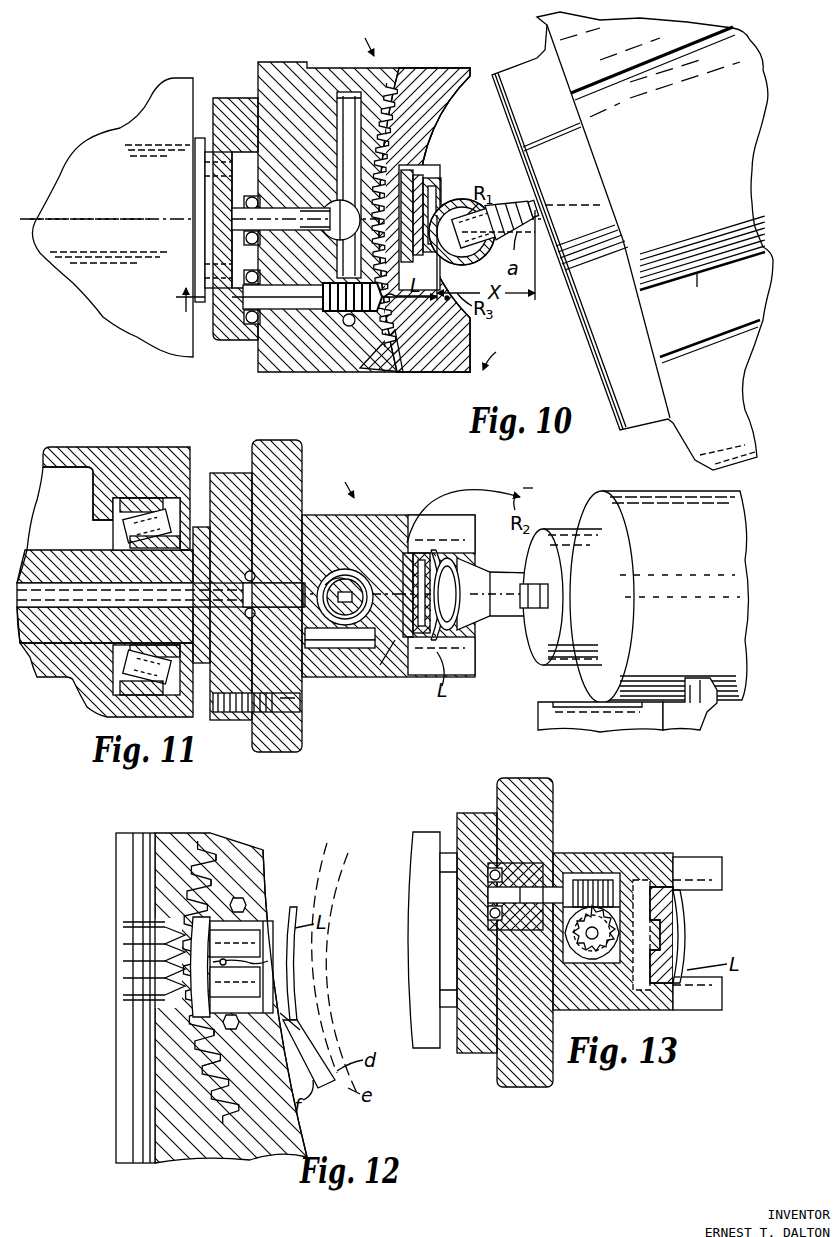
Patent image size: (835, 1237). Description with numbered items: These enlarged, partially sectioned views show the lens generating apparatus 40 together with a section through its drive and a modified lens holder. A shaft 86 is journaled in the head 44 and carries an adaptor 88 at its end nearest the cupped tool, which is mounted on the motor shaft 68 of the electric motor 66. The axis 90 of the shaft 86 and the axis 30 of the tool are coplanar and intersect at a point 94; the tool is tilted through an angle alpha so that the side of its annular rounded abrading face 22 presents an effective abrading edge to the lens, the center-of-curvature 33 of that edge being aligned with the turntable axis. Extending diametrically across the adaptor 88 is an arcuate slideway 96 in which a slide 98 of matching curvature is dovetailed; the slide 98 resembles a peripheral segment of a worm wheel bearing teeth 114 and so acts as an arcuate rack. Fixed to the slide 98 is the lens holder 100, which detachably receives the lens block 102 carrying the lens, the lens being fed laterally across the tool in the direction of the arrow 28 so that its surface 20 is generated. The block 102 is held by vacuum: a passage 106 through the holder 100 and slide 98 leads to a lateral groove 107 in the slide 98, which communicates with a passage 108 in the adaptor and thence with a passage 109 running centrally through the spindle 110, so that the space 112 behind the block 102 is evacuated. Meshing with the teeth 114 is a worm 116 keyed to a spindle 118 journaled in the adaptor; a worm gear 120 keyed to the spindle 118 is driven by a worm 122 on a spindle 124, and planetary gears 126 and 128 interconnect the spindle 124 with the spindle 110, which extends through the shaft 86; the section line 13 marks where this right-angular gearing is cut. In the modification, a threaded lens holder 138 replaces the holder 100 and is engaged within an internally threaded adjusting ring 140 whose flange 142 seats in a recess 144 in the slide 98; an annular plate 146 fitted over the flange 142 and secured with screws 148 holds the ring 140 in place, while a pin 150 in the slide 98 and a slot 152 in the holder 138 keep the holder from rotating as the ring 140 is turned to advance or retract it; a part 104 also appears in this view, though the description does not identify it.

In FIG. 10, the section line 13— 13 is at (308, 309).
In FIG. 11, the surface 20 is at (437, 650).
In FIG. 12, the surface 20 is at (299, 1000).
In FIG. 10, the annular rounded abrading face 22 is at (447, 300).
In FIG. 10, the arrow 28 is at (500, 356).
In FIG. 10, the axis 30 is at (573, 210).
In FIG. 10, the center-of-curvature 33 is at (434, 217).
In FIG. 10, the apparatus 40 is at (360, 35).
In FIG. 11, the apparatus 40 is at (388, 568).
In FIG. 10, the head 44 is at (107, 138).
In FIG. 11, the head 44 is at (103, 447).
In FIG. 13, the head 44 is at (425, 863).
In FIG. 10, the electric motor 66 is at (738, 46).
In FIG. 11, the electric motor 66 is at (727, 500).
In FIG. 11, the motor shaft 68 is at (550, 605).
In FIG. 11, the shaft 86 is at (57, 550).
In FIG. 10, the adaptor 88 is at (398, 66).
In FIG. 11, the adaptor 88 is at (303, 750).
In FIG. 12, the adaptor 88 is at (178, 828).
In FIG. 13, the adaptor 88 is at (527, 775).
In FIG. 10, the axis 90 is at (78, 218).
In FIG. 10, the point 94 is at (530, 203).
In FIG. 11, the point 94 is at (511, 618).
In FIG. 10, the arcuate slideway 96 is at (452, 372).
In FIG. 11, the arcuate slideway 96 is at (408, 548).
In FIG. 13, the arcuate slideway 96 is at (672, 878).
In FIG. 10, the slide 98 is at (425, 368).
In FIG. 11, the slide 98 is at (405, 650).
In FIG. 12, the slide 98 is at (240, 1120).
In FIG. 13, the slide 98 is at (662, 978).
In FIG. 10, the lens holder 100 is at (412, 172).
In FIG. 11, the lens holder 100 is at (410, 552).
In FIG. 10, the lens block 102 is at (420, 185).
In FIG. 11, the lens block 102 is at (422, 556).
In FIG. 12, the bolt 104 is at (282, 916).
In FIG. 11, the passage 106 is at (380, 636).
In FIG. 11, the lateral groove 107 is at (383, 648).
In FIG. 11, the passage 108 is at (312, 632).
In FIG. 11, the passage 109 is at (340, 572).
In FIG. 10, the spindle 110 is at (305, 197).
In FIG. 11, the spindle 110 is at (120, 582).
In FIG. 10, the space 112 is at (434, 200).
In FIG. 10, the teeth 114 is at (429, 64).
In FIG. 11, the teeth 114 is at (358, 585).
In FIG. 12, the teeth 114 is at (227, 885).
In FIG. 10, the worm 116 is at (332, 170).
In FIG. 11, the worm 116 is at (357, 570).
In FIG. 12, the worm 116 is at (123, 940).
In FIG. 10, the spindle 118 is at (335, 90).
In FIG. 11, the spindle 118 is at (352, 563).
In FIG. 13, the spindle 118 is at (562, 958).
In FIG. 10, the worm gear 120 is at (383, 298).
In FIG. 13, the worm gear 120 is at (582, 948).
In FIG. 10, the worm 122 is at (346, 318).
In FIG. 13, the worm 122 is at (603, 877).
In FIG. 10, the spindle 124 is at (241, 335).
In FIG. 13, the spindle 124 is at (537, 883).
In FIG. 10, the planetary gear 126 is at (258, 348).
In FIG. 13, the planetary gear 126 is at (530, 857).
In FIG. 10, the planetary gear 128 is at (232, 253).
In FIG. 12, the modified lens holder 138 is at (268, 1036).
In FIG. 12, the adjusting ring 140 is at (258, 1024).
In FIG. 12, the flange 142 is at (239, 876).
In FIG. 12, the recess 144 is at (205, 893).
In FIG. 12, the annular plate 146 is at (247, 903).
In FIG. 12, the screws 148 is at (244, 1050).
In FIG. 12, the pin 150 is at (262, 968).
In FIG. 12, the slot 152 is at (248, 960).